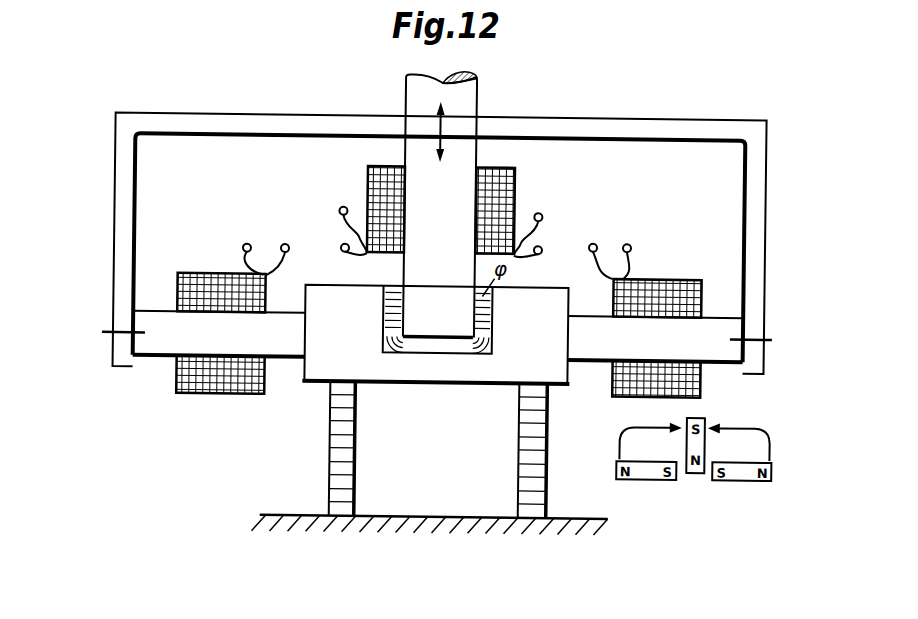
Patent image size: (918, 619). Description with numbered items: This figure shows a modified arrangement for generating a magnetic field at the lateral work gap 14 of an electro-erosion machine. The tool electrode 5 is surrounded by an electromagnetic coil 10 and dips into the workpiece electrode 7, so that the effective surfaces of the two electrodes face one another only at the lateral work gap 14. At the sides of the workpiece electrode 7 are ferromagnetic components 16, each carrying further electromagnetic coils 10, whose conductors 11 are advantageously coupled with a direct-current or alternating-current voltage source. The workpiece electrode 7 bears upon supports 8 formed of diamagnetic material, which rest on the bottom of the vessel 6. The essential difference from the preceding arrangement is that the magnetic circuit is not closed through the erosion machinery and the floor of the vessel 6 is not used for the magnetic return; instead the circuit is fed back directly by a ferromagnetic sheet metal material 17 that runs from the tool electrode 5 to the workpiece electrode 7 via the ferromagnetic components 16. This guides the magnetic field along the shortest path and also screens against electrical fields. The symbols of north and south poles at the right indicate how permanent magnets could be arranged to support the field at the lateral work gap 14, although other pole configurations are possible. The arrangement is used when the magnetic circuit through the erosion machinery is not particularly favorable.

The tool electrode 5 is at (412, 98).
The vessel 6 is at (443, 532).
The workpiece electrode 7 is at (334, 296).
The supports 8 is at (530, 427).
The electromagnetic coils 10 is at (508, 177).
The conductors 11 is at (342, 246).
The lateral work gap 14 is at (398, 286).
The ferromagnetic components 16 is at (292, 350).
The ferromagnetic sheet metal material 17 is at (180, 123).